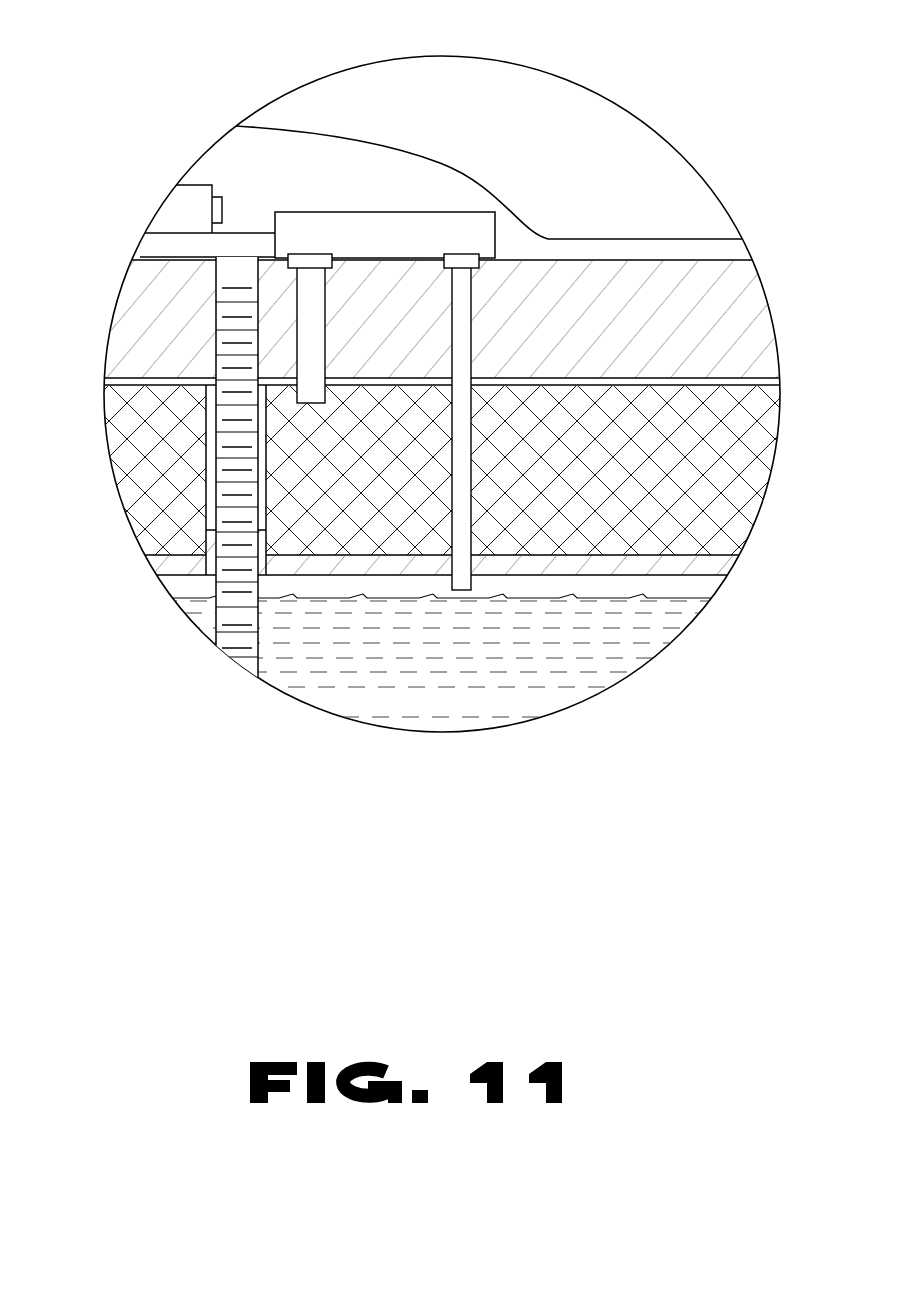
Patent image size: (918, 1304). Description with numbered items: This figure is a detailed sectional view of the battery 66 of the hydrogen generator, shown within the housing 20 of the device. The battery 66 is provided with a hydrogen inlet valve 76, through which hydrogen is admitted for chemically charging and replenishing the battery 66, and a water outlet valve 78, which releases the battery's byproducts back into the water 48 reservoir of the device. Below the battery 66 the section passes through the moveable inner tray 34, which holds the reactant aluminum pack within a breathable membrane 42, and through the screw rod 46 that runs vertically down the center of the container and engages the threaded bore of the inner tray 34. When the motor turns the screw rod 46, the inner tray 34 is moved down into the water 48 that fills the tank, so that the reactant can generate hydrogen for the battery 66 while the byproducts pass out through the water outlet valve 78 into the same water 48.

The housing 20 is at (143, 318).
The inner tray 34 is at (190, 563).
The membrane 42 is at (695, 505).
The screw rod 46 is at (243, 653).
The water 48 is at (420, 712).
The battery 66 is at (365, 220).
The hydrogen inlet valve 76 is at (307, 258).
The water outlet valve 78 is at (465, 287).